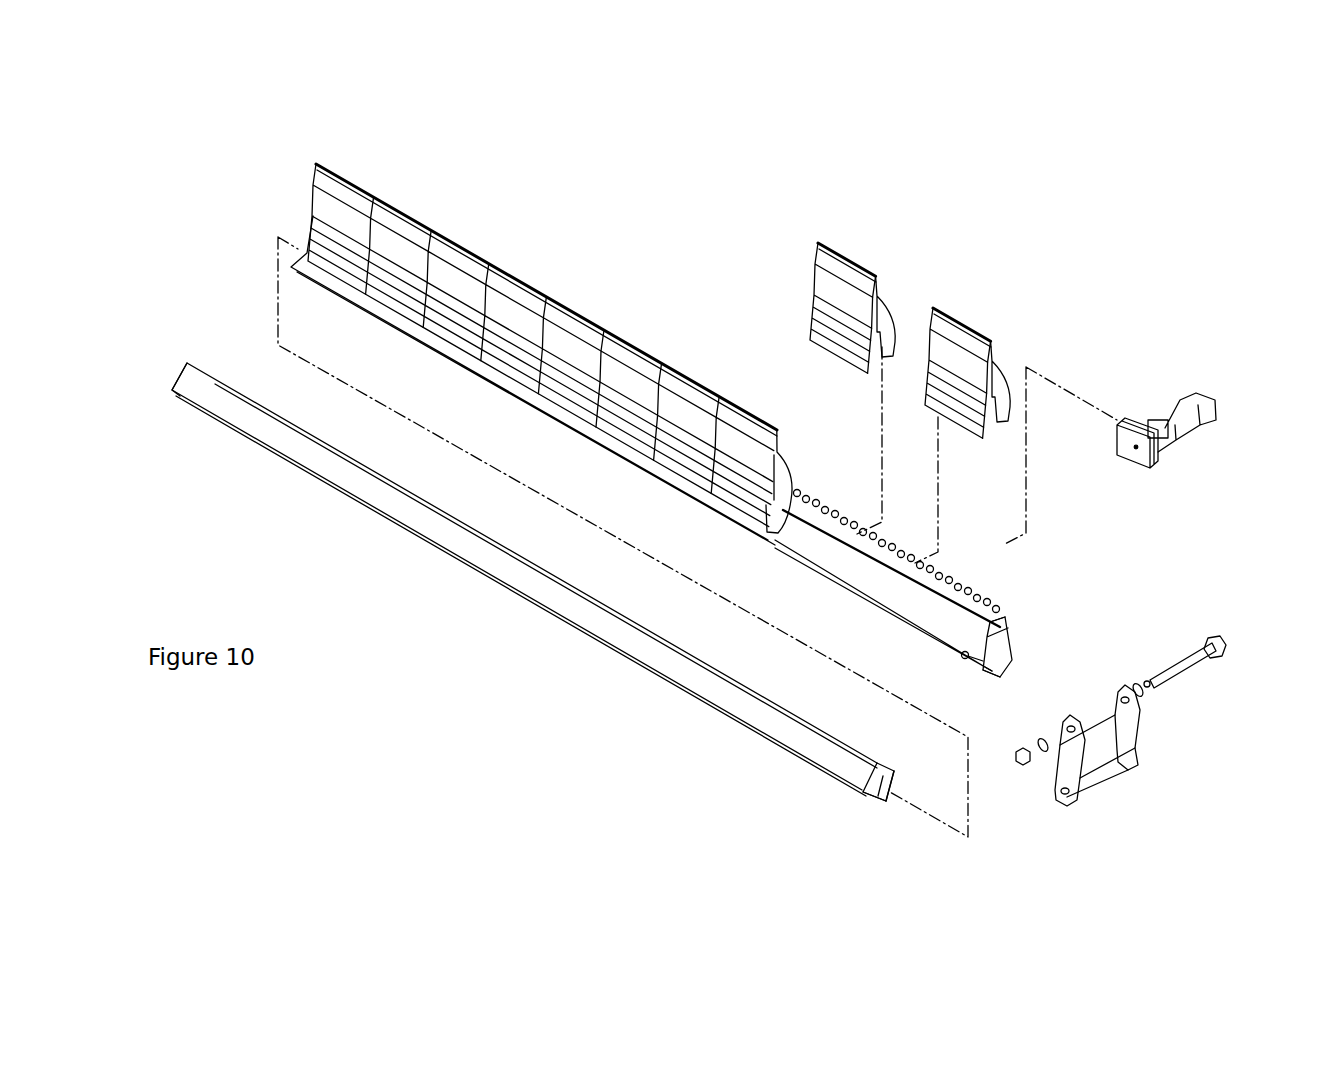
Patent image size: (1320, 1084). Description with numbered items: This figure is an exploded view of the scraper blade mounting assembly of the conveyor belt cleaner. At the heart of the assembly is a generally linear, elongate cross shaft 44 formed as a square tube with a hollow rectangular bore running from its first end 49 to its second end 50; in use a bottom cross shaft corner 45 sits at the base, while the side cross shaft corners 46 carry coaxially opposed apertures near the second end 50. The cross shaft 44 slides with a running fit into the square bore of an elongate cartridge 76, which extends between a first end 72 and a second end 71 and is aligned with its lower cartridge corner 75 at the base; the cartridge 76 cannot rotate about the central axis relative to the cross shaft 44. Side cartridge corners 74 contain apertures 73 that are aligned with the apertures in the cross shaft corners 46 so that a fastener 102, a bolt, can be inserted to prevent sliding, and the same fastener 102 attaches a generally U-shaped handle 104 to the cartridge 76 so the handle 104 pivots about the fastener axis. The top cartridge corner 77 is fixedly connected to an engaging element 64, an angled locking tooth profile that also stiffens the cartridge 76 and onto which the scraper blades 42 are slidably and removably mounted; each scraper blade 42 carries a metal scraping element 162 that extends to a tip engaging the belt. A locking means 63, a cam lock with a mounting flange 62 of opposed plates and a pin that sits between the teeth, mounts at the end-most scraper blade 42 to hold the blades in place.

The scraper blade 42 is at (452, 270).
The second end 71 is at (300, 250).
The scraping element 162 is at (830, 246).
The first end 49 is at (178, 383).
The cross shaft 44 is at (512, 598).
The side cross shaft corners 46 is at (890, 772).
The bottom cross shaft corner 45 is at (880, 805).
The second end 50 is at (893, 795).
The cartridge 76 is at (828, 563).
The top cartridge corner 77 is at (862, 553).
The apertures 73 is at (961, 654).
The side cartridge corners 74 is at (906, 623).
The engaging element 64 is at (897, 622).
The first end 72 is at (1010, 665).
The lower cartridge corner 75 is at (1000, 680).
The mounting flange 62 is at (1160, 455).
The locking means 63 is at (1200, 393).
The fastener 102 is at (1200, 640).
The handle 104 is at (1143, 730).